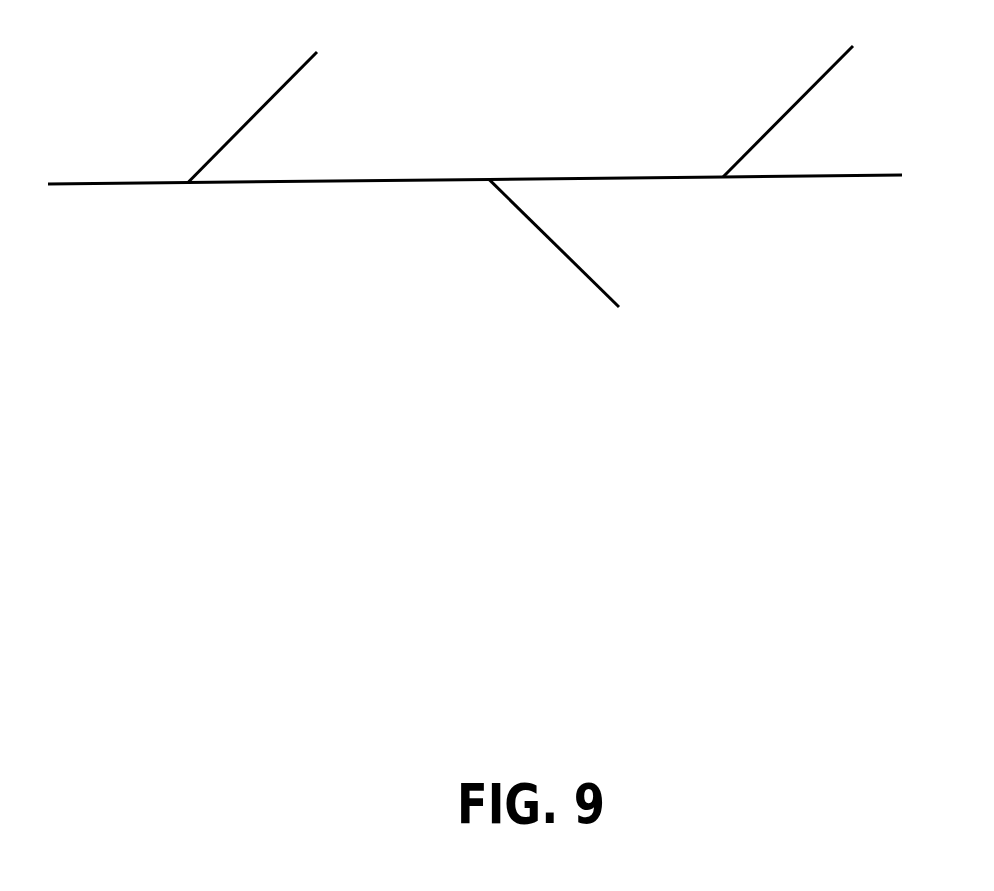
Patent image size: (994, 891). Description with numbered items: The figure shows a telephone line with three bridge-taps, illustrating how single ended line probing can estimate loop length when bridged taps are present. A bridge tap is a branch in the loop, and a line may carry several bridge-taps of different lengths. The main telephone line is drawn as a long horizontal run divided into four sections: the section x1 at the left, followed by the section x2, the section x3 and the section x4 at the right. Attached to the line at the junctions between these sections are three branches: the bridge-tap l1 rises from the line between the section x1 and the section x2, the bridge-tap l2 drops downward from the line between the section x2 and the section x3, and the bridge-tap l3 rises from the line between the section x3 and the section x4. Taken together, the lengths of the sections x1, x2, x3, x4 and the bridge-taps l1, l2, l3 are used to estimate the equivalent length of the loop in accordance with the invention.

The section of the telephone line x1 is at (118, 206).
The section of the telephone line x2 is at (338, 160).
The section of the telephone line x3 is at (606, 156).
The section of the telephone line x4 is at (812, 198).
The bridge-tap l1 is at (252, 117).
The bridge-tap l2 is at (554, 243).
The bridge-tap l3 is at (788, 111).